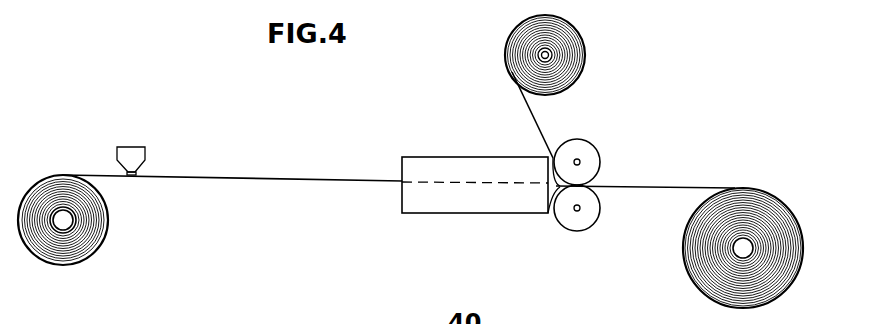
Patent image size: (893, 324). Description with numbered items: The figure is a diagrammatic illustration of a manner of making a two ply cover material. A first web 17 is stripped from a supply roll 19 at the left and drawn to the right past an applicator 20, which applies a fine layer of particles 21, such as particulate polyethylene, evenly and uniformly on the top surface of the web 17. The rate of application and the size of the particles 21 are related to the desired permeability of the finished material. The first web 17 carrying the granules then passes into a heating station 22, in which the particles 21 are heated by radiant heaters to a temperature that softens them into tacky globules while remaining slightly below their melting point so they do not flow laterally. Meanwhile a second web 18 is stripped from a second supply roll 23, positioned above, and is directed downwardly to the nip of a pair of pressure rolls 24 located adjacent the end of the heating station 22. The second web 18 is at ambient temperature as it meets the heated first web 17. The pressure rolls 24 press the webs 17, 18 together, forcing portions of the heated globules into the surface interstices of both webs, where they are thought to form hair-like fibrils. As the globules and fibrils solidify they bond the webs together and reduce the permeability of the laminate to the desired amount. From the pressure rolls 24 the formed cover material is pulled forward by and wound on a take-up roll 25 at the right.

The first web 17 is at (246, 178).
The second web 18 is at (538, 125).
The supply roll 19 is at (90, 215).
The applicator 20 is at (118, 150).
The particles 21 is at (138, 173).
The heating station 22 is at (436, 167).
The supply roll 23 is at (570, 52).
The pressure rolls 24 is at (585, 200).
The take-up roll 25 is at (750, 205).